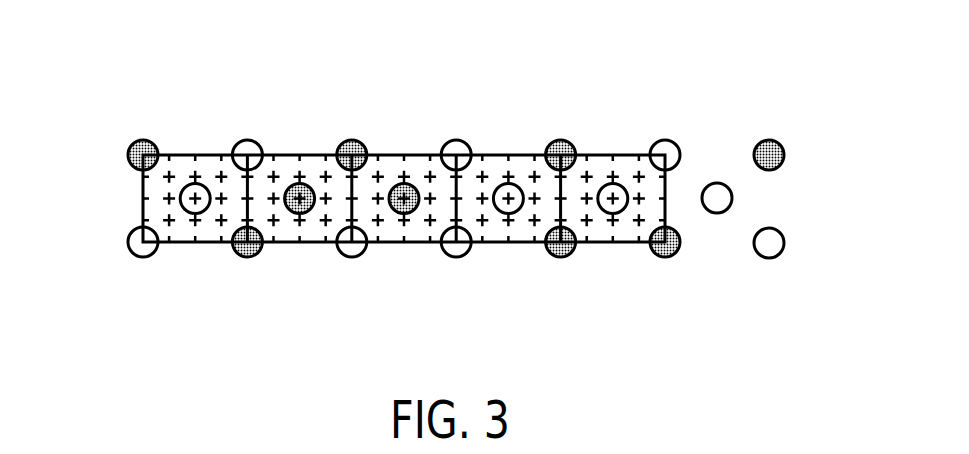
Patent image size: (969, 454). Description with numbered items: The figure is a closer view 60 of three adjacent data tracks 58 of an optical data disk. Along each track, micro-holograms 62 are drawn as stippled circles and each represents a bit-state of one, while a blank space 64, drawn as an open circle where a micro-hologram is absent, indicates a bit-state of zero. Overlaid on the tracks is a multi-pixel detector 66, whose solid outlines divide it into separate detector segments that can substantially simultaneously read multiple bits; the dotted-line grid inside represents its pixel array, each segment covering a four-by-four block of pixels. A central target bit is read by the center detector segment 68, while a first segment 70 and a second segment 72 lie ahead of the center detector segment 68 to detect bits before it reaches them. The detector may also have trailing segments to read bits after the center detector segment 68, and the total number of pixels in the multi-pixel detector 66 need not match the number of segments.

The data tracks 58 is at (812, 155).
The closer view 60 is at (121, 57).
The micro-holograms 62 is at (142, 141).
The blank space 64 is at (247, 141).
The multi-pixel detector 66 is at (131, 200).
The center detector segment 68 is at (457, 136).
The first segment 70 is at (457, 261).
The second segment 72 is at (561, 136).